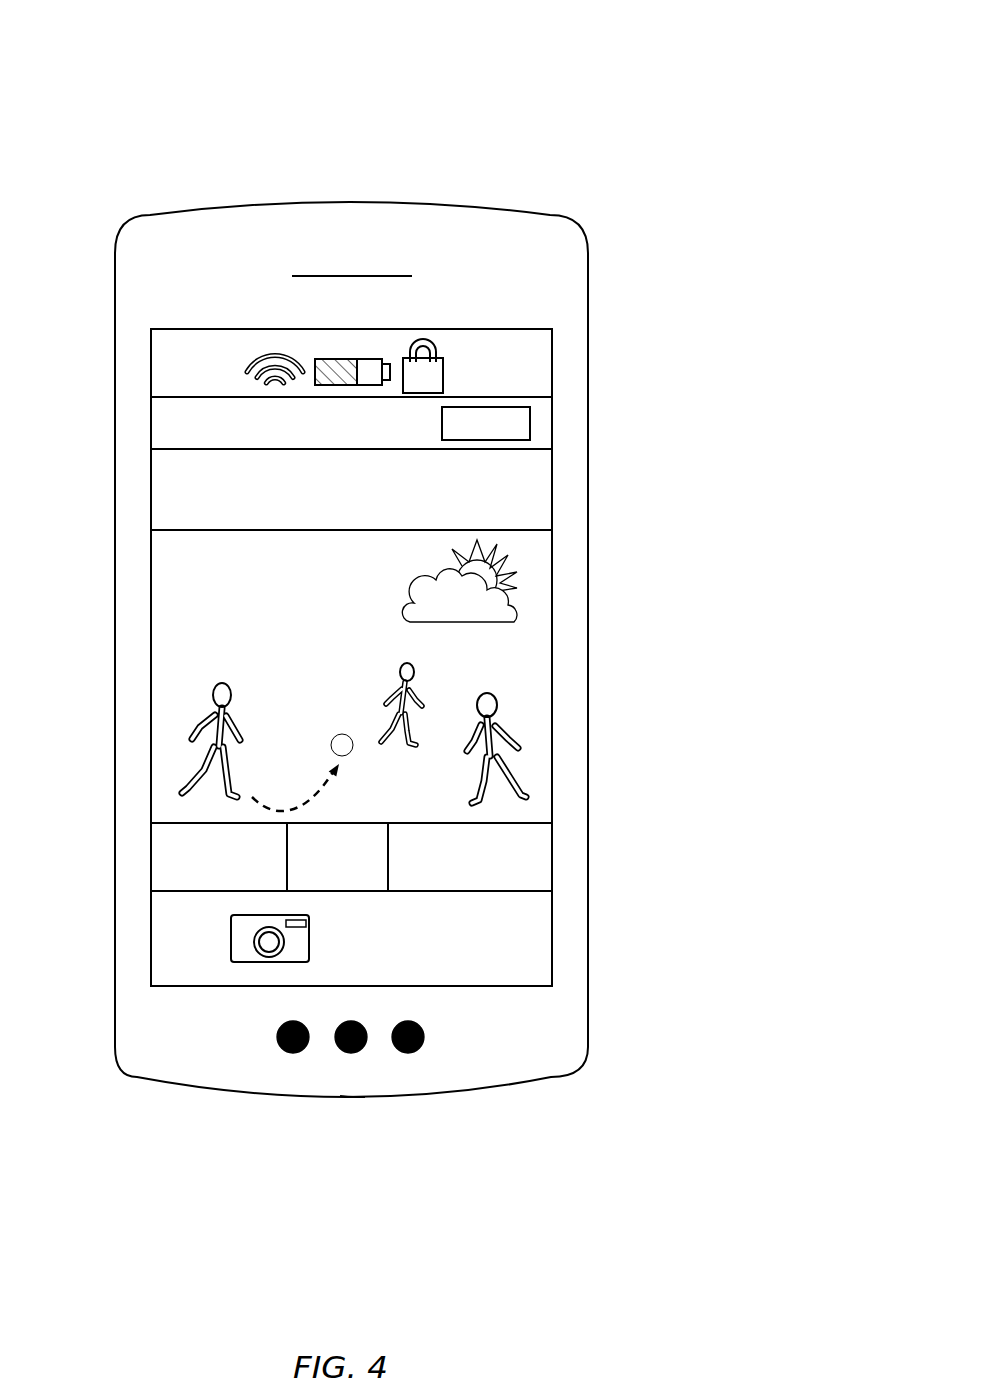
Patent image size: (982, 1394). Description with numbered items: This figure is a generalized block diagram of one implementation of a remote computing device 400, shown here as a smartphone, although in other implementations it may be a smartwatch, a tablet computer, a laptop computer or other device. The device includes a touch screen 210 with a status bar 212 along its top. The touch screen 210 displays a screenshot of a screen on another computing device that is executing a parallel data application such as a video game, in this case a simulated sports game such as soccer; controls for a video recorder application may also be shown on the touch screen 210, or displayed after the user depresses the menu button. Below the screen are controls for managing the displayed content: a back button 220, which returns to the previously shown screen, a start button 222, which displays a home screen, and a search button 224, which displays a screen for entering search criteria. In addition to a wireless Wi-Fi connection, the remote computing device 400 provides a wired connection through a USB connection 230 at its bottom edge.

The remote computing device 400 is at (710, 95).
The touch screen 210 is at (553, 510).
The status bar 212 is at (553, 368).
The back button 220 is at (273, 1043).
The start button 222 is at (345, 1048).
The search button 224 is at (418, 1050).
The USB connection 230 is at (357, 1097).